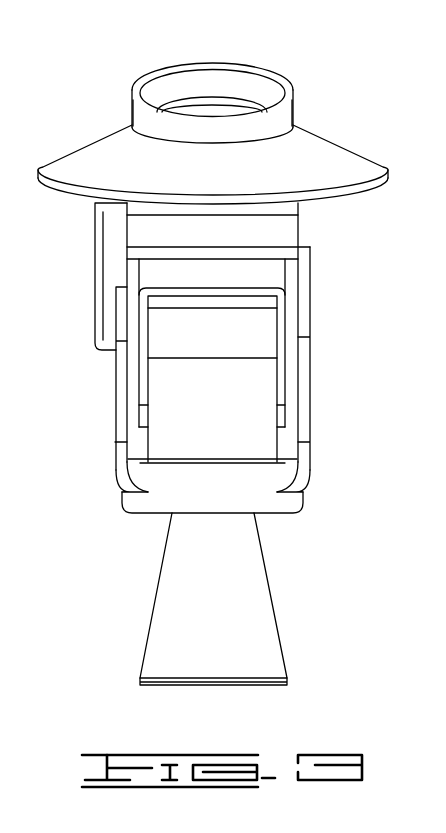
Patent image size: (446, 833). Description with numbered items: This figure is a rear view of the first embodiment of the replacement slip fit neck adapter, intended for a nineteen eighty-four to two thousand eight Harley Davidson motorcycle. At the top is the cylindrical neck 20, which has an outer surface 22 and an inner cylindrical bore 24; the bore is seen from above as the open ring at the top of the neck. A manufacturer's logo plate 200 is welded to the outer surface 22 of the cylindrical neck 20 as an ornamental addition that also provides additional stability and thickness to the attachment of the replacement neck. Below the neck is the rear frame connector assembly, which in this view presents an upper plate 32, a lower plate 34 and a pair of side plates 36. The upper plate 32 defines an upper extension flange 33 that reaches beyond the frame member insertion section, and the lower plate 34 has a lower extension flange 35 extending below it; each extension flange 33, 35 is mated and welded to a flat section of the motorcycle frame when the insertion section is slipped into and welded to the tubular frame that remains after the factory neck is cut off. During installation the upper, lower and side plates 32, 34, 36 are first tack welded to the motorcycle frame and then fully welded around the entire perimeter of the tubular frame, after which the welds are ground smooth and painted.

The cylindrical neck 20 is at (295, 98).
The outer surface 22 is at (248, 131).
The inner cylindrical bore 24 is at (240, 75).
The manufacturer's logo plate 200 is at (337, 196).
The upper plate 32 is at (133, 212).
The upper extension flange 33 is at (263, 255).
The lower plate 34 is at (273, 501).
The lower extension flange 35 is at (262, 650).
The side plates 36 is at (120, 330).